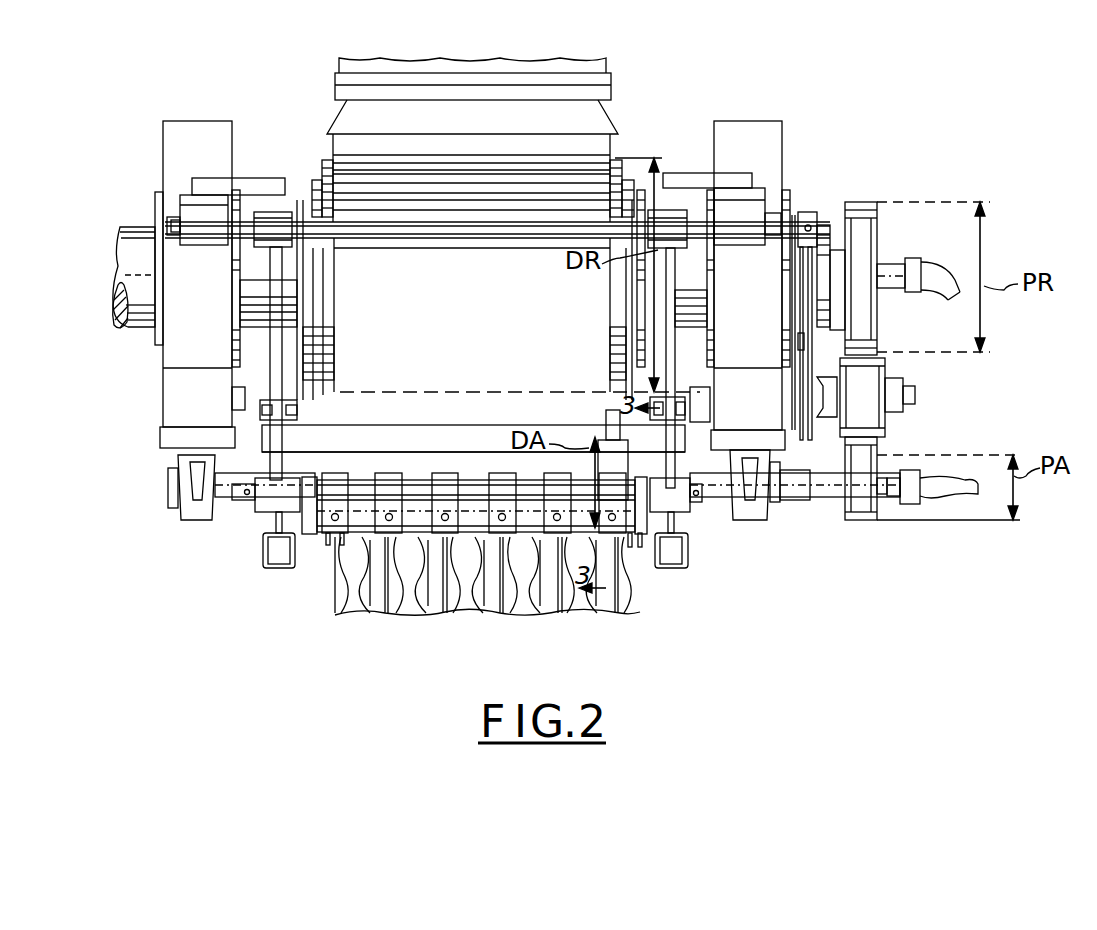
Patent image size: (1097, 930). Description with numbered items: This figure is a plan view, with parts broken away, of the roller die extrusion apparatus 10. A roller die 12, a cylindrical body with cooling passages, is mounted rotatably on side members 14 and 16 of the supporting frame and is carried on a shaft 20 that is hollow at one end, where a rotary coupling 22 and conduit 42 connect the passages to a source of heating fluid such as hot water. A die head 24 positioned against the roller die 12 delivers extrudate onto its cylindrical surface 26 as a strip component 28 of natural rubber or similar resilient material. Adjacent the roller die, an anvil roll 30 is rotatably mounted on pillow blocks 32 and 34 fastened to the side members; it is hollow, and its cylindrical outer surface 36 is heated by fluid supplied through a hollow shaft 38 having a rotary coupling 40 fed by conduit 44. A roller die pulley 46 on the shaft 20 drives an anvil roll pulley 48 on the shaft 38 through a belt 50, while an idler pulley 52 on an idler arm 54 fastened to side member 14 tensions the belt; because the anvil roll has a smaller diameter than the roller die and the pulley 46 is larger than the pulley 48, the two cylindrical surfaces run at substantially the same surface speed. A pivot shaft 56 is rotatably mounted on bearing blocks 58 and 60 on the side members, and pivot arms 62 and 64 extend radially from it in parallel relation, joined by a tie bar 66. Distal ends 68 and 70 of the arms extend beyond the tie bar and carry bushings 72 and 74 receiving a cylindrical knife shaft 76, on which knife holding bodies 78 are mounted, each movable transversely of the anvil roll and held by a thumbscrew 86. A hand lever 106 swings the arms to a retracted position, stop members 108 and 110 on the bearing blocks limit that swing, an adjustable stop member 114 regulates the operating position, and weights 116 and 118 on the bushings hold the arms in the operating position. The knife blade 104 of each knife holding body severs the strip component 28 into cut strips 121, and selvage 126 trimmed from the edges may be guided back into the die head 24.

The roller die extrusion apparatus 10 is at (620, 105).
The roller die 12 is at (326, 352).
The side member 14 is at (784, 146).
The side member 16 is at (222, 149).
The shaft 20 is at (132, 248).
The rotary coupling 22 is at (910, 262).
The die head 24 is at (346, 116).
The cylindrical surface 26 is at (615, 162).
The strip component 28 is at (430, 317).
The anvil roll 30 is at (326, 465).
The pillow block 32 is at (752, 512).
The pillow block 34 is at (190, 522).
The cylindrical outer surface 36 is at (584, 454).
The hollow shaft 38 is at (808, 494).
The rotary coupling 40 is at (912, 508).
The conduit 42 is at (952, 274).
The conduit 44 is at (974, 508).
The roller die sprocket or pulley 46 is at (878, 204).
The anvil roll sprocket or pulley 48 is at (872, 522).
The belt 50 is at (855, 452).
The idler pulley 52 is at (890, 398).
The idler arm 54 is at (862, 367).
The pivot shaft 56 is at (512, 240).
The bearing block 58 is at (746, 214).
The bearing block 60 is at (208, 218).
The pivot arm 62 is at (662, 293).
The pivot arm 64 is at (270, 281).
The tie bar 66 is at (435, 445).
The distal end 68 is at (608, 458).
The distal end 70 is at (248, 504).
The bushing 72 is at (682, 509).
The bushing 74 is at (262, 516).
The knife shaft 76 is at (234, 520).
The knife holding body 78 is at (349, 618).
The thumbscrew 86 is at (346, 500).
The knife blade 104 is at (336, 550).
The hand lever 106 is at (808, 344).
The stop member 108 is at (733, 186).
The stop member 110 is at (210, 180).
The adjustable stop member 114 is at (296, 409).
The weight 116 is at (682, 550).
The weight 118 is at (278, 562).
The cut strips 121 is at (392, 612).
The selvage 126 is at (328, 540).